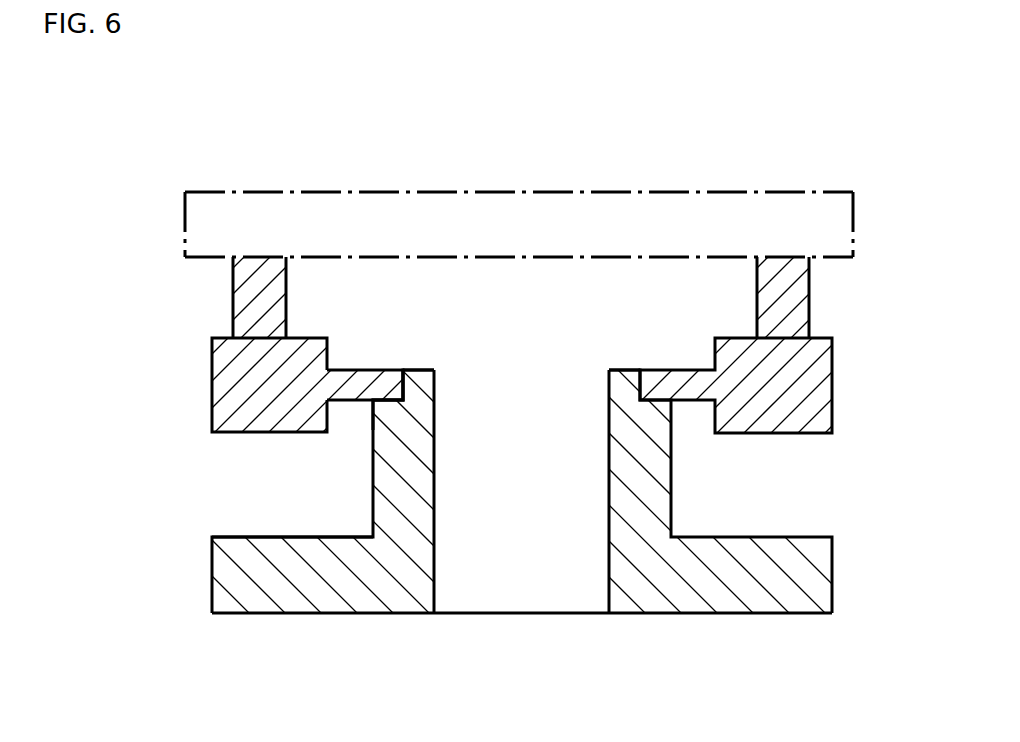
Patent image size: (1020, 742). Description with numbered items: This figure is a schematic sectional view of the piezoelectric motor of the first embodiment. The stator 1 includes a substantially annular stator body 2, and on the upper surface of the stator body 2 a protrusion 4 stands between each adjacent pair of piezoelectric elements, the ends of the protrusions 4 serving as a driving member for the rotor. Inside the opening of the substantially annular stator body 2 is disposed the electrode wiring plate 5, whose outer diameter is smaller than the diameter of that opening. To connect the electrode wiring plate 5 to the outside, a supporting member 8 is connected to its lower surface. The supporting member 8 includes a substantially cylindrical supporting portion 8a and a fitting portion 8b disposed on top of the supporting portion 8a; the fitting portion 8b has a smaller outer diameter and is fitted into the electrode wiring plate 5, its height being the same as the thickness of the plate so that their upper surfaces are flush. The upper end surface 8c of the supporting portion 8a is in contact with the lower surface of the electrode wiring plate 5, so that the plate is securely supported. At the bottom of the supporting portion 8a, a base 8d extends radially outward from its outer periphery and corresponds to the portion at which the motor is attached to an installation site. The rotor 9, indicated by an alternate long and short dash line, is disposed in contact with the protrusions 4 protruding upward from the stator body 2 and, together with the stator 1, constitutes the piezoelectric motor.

The stator 1 is at (239, 359).
The stator body 2 is at (213, 412).
The protrusion 4 is at (232, 292).
The electrode wiring plate 5 is at (365, 370).
The supporting member 8 is at (476, 514).
The substantially cylindrical supporting portion 8a is at (372, 513).
The fitting portion 8b is at (420, 368).
The upper end surface 8c is at (343, 402).
The base 8d is at (305, 582).
The rotor 9 is at (688, 190).